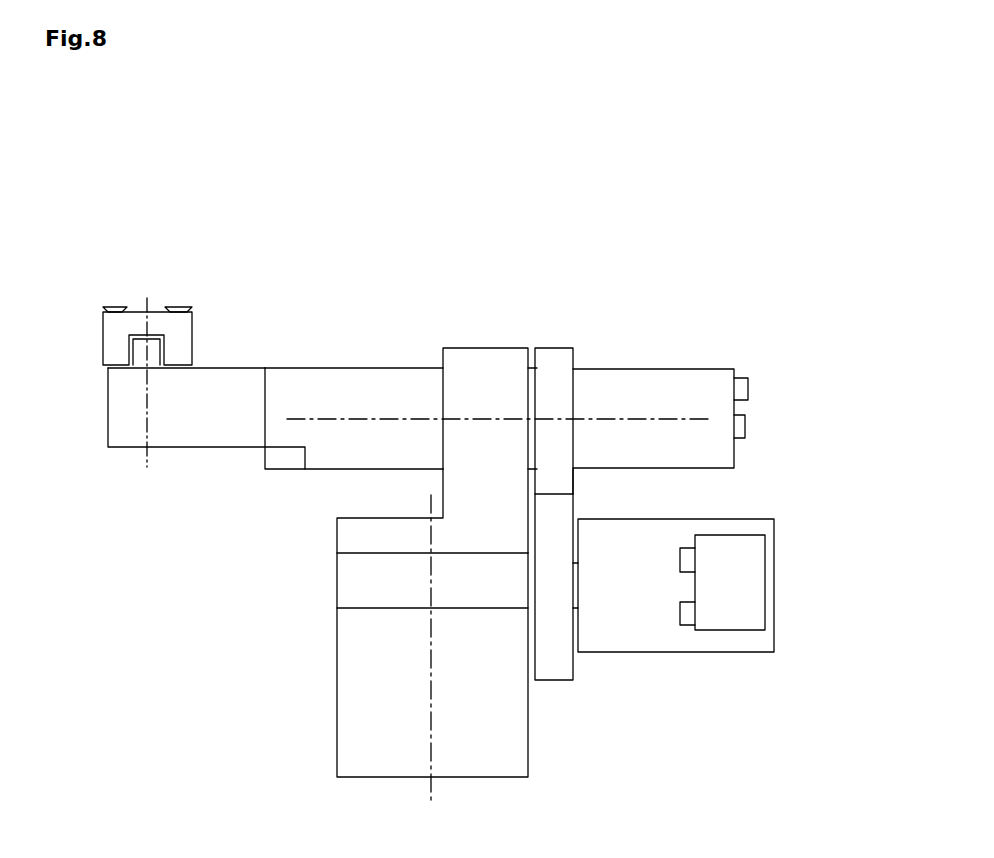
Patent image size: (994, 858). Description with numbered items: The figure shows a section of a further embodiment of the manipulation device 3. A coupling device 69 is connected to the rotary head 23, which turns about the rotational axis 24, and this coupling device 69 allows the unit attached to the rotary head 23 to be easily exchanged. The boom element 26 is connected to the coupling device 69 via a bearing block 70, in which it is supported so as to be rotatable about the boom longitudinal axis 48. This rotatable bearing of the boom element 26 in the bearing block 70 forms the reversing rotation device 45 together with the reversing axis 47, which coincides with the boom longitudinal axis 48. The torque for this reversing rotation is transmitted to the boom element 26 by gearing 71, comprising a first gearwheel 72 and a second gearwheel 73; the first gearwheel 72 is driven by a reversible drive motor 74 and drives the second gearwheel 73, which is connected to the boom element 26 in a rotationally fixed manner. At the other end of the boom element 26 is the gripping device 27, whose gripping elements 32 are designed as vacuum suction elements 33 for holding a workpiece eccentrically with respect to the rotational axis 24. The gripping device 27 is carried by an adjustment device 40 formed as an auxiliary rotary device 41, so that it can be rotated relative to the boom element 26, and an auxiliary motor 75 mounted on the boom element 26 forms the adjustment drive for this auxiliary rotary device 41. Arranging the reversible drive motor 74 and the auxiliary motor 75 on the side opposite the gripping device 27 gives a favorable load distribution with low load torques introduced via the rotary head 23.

The manipulation device 3 is at (672, 150).
The rotary head 23 is at (355, 712).
The rotational axis 24 is at (430, 728).
The boom element 26 is at (307, 393).
The gripping device 27 is at (118, 415).
The gripping elements 32 is at (180, 307).
The vacuum suction elements 33 is at (154, 289).
The adjustment device 40 is at (158, 383).
The auxiliary rotary device 41 is at (90, 452).
The reversing rotation device 45 is at (478, 328).
The reversing axis 47 is at (347, 418).
The boom longitudinal axis 48 is at (499, 334).
The coupling device 69 is at (350, 578).
The bearing block 70 is at (497, 362).
The gearing 71 is at (608, 491).
The first gearwheel 72 is at (548, 667).
The second gearwheel 73 is at (560, 368).
The reversible drive motor 74 is at (755, 640).
The auxiliary motor 75 is at (690, 393).